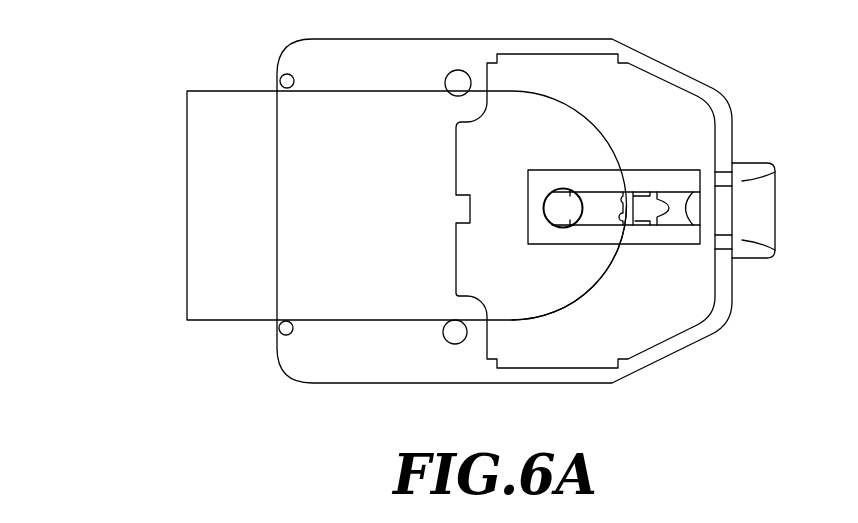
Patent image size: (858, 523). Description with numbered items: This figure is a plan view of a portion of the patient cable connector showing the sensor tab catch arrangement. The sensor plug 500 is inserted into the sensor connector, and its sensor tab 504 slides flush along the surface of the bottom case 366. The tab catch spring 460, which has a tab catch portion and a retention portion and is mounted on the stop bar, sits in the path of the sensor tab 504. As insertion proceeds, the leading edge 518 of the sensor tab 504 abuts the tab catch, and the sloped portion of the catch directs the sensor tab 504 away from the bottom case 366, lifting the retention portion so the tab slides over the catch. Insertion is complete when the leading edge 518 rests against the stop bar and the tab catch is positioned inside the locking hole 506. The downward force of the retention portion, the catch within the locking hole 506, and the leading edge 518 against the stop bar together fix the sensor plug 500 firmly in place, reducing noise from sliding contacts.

The bottom case 366 is at (723, 333).
The sensor plug 500 is at (237, 321).
The sensor tab 504 is at (570, 121).
The leading edge 518 is at (617, 258).
The tab catch spring 460 is at (653, 177).
The locking hole 506 is at (587, 226).